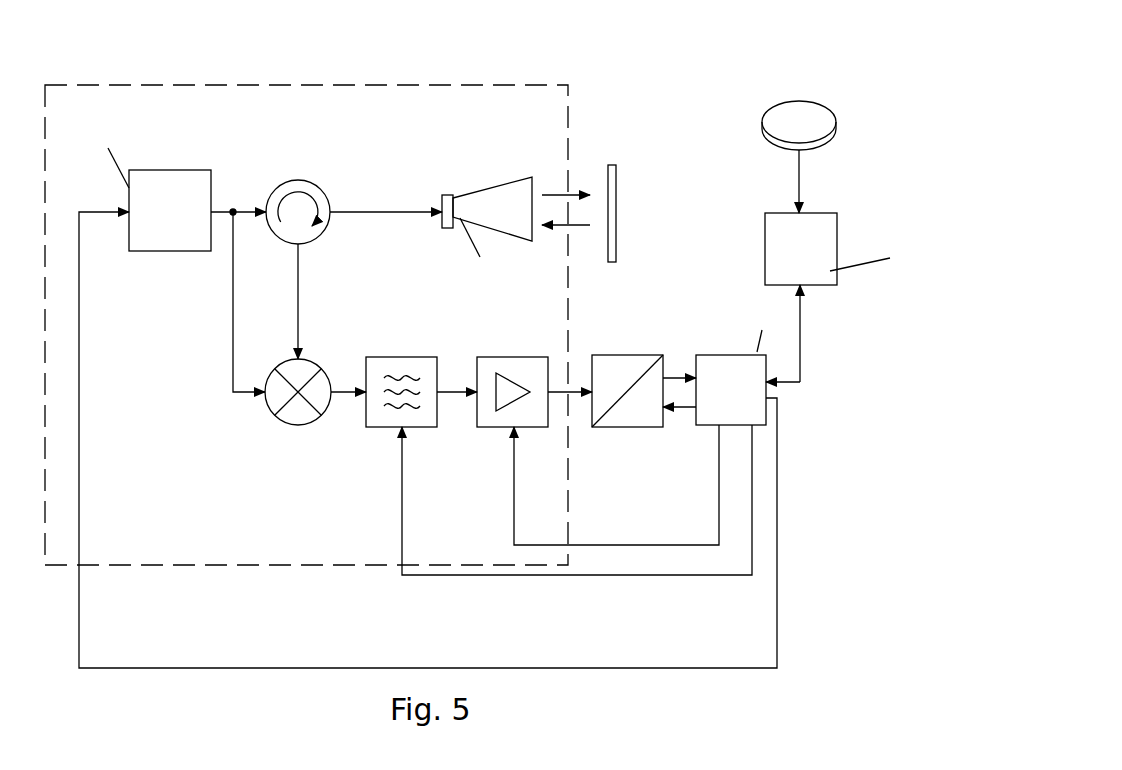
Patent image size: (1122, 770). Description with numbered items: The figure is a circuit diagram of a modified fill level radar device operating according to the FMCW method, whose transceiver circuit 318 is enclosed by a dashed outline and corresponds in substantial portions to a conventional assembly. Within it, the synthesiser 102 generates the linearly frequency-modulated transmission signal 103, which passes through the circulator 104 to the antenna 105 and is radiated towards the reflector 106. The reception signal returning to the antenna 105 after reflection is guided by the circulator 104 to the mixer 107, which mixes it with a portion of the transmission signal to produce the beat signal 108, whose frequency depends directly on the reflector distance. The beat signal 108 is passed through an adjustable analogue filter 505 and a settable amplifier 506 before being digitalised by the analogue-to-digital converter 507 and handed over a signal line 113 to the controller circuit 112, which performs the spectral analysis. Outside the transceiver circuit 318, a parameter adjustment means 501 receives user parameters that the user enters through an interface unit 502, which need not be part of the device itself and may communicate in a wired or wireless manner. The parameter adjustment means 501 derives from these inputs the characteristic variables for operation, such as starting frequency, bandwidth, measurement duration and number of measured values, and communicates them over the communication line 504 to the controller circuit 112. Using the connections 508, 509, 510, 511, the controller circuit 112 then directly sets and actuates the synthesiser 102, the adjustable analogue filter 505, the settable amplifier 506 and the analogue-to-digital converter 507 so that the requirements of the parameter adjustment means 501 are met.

The transceiver circuit 318 is at (505, 85).
The synthesiser 102 is at (150, 251).
The circulator 104 is at (278, 190).
The antenna 105 is at (485, 190).
The transmission signal 103 is at (552, 195).
The reflector 106 is at (612, 165).
The mixer 107 is at (293, 428).
The beat signal 108 is at (337, 385).
The adjustable analogue filter 505 is at (380, 427).
The settable amplifier 506 is at (497, 427).
The analogue-to-digital converter 507 is at (633, 355).
The digitized signal line 113 is at (670, 375).
The connection 511 is at (688, 410).
The controller circuit 112 is at (710, 428).
The communication line 504 is at (790, 385).
The parameter adjustment means 501 is at (765, 250).
The interface unit 502 is at (792, 100).
The connection 508 is at (323, 668).
The connection 509 is at (570, 577).
The connection 510 is at (585, 545).